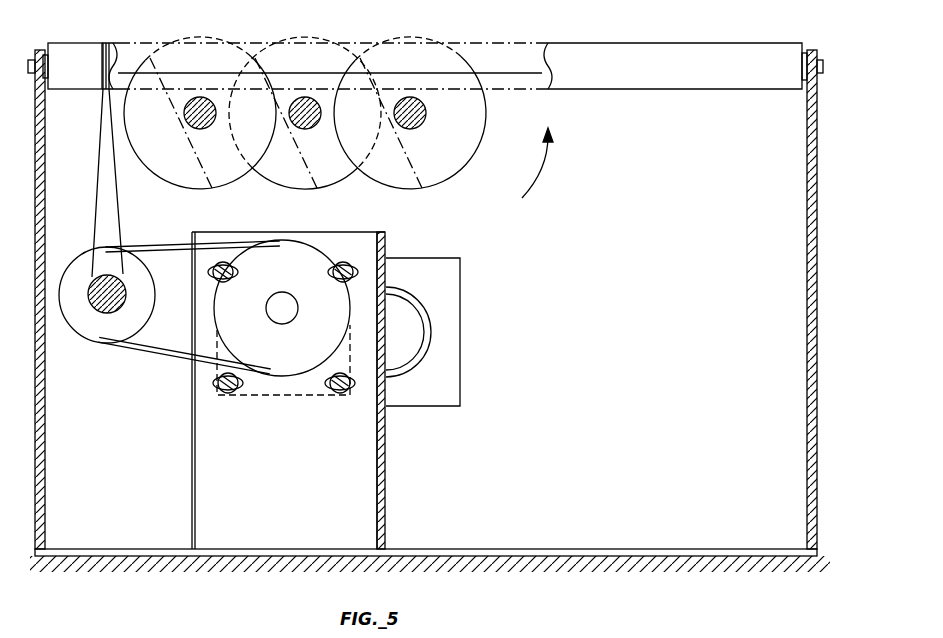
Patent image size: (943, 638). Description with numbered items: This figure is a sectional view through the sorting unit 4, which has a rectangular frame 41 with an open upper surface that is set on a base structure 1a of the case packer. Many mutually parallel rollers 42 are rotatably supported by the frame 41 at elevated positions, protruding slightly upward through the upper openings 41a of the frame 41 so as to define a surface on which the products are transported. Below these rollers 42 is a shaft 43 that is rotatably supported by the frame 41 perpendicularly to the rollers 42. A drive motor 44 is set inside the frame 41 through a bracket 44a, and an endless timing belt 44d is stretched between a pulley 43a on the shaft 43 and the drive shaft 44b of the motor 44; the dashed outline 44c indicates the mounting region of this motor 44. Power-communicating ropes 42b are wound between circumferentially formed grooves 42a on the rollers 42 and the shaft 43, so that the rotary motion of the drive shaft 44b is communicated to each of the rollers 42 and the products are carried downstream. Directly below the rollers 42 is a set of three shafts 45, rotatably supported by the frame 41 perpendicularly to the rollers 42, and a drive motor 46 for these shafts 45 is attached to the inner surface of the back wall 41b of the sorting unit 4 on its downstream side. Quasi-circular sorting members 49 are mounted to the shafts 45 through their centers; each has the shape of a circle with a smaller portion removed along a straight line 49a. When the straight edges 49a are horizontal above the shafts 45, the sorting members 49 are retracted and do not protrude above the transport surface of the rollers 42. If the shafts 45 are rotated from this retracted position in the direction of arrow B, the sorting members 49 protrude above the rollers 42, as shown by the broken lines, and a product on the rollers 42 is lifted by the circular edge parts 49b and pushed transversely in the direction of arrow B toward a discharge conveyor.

The sorting unit 4 is at (826, 87).
The rectangular frame 41 is at (818, 412).
The upper openings 41a is at (510, 73).
The back wall 41b is at (817, 458).
The base structure 1a is at (820, 557).
The rollers 42 is at (748, 46).
The grooves 42a is at (102, 42).
The power-communicating ropes 42b is at (102, 127).
The shaft 43 is at (107, 303).
The pulley 43a is at (142, 270).
The drive motor 44 is at (270, 390).
The bracket 44a is at (385, 480).
The drive shaft 44b is at (277, 300).
The motor mounting plate 44c is at (282, 365).
The endless timing belt 44d is at (157, 350).
The shafts 45 is at (188, 126).
The drive motor 46 is at (453, 310).
The sorting members 49 is at (190, 183).
The straight line 49a is at (162, 82).
The circular edge parts 49b is at (222, 25).
The arrow B is at (537, 163).